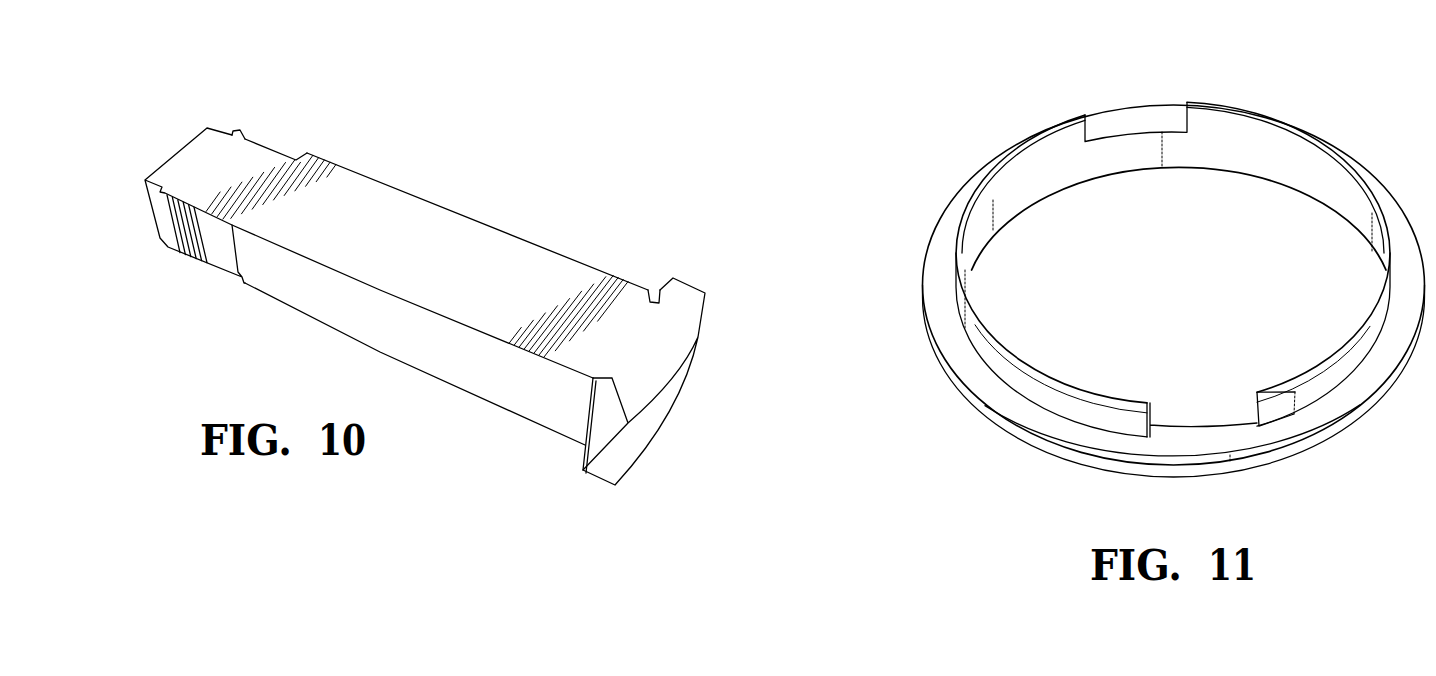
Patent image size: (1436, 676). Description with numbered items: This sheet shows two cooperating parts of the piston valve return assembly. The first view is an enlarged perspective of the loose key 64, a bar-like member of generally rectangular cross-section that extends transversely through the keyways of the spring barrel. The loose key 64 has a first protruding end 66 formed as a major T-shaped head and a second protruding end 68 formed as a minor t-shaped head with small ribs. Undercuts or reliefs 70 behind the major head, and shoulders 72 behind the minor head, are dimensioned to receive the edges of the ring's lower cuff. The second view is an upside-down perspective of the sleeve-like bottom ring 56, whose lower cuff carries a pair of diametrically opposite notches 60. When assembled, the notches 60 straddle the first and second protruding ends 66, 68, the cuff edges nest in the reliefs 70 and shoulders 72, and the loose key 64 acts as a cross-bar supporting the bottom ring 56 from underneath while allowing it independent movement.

In FIG. 11, the bottom ring 56 is at (945, 197).
In FIG. 11, the notches 60 is at (1102, 131).
In FIG. 10, the loose key 64 is at (490, 228).
In FIG. 10, the first protruding end 66 is at (661, 417).
In FIG. 10, the second protruding end 68 is at (171, 154).
In FIG. 10, the reliefs 70 is at (656, 296).
In FIG. 10, the shoulders 72 is at (244, 138).